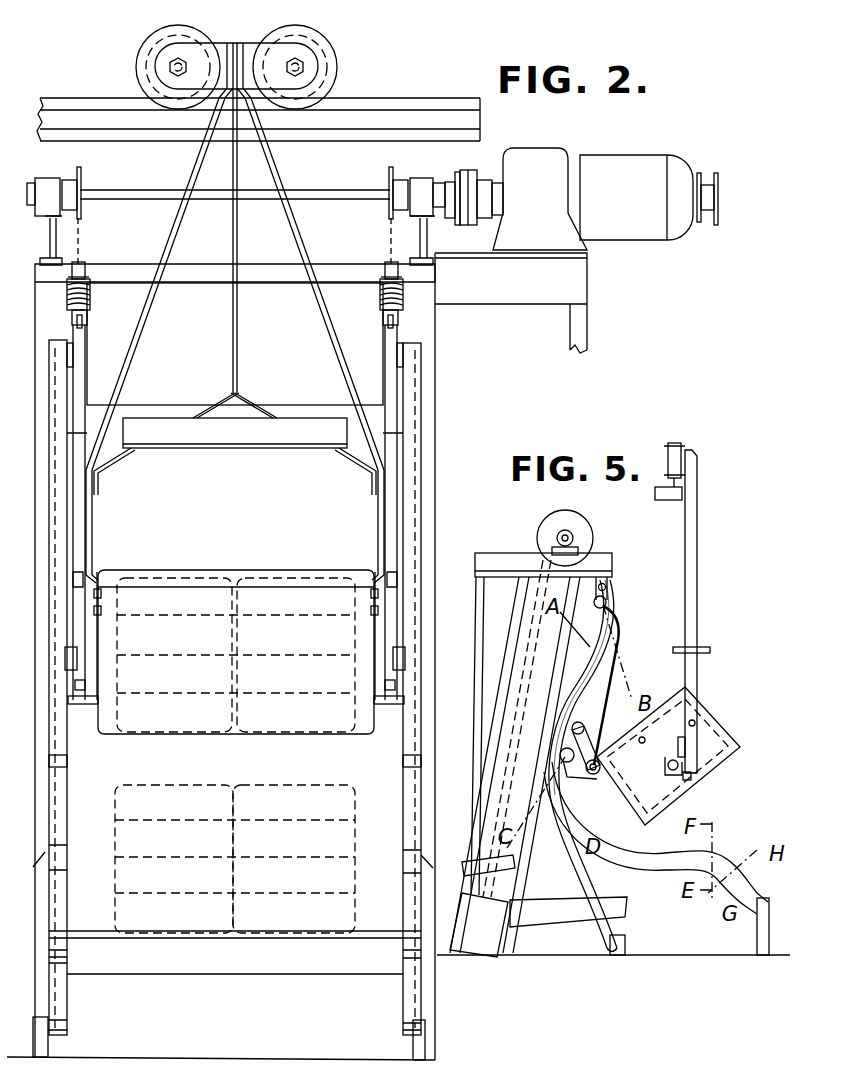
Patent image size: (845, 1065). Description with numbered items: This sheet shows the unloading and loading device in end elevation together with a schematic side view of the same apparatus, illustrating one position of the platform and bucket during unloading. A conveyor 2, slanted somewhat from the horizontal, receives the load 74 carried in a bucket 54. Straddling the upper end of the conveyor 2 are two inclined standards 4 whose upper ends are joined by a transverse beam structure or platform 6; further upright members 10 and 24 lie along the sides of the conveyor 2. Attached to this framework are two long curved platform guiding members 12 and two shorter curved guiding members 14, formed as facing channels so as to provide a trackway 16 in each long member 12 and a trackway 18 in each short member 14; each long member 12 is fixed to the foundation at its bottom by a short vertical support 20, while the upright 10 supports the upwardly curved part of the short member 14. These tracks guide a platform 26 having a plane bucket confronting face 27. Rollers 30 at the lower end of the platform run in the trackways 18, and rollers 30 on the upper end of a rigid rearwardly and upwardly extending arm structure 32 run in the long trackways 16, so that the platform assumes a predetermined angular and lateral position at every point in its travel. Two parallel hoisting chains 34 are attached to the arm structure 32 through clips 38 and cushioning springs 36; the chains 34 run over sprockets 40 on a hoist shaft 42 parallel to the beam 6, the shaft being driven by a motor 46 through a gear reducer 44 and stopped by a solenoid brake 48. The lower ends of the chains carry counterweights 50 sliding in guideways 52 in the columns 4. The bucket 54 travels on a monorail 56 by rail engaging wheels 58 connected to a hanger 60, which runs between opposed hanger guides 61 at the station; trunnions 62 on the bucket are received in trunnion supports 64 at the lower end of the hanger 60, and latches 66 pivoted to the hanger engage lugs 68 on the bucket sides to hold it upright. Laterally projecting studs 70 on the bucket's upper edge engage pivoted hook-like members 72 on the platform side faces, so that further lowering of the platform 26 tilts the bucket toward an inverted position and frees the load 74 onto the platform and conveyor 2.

In FIG. 2, the conveyor 2 is at (236, 976).
In FIG. 5, the conveyor 2 is at (547, 917).
In FIG. 2, the standards 4 is at (36, 383).
In FIG. 5, the standards 4 is at (471, 823).
In FIG. 2, the transverse beam structure or platform 6 is at (48, 242).
In FIG. 5, the transverse beam structure or platform 6 is at (503, 563).
In FIG. 2, the upright member 10 is at (36, 968).
In FIG. 2, the curved platform guiding member 12 is at (58, 441).
In FIG. 5, the curved platform guiding member 12 is at (596, 883).
In FIG. 2, the short curved platform guiding member 14 is at (60, 792).
In FIG. 5, the short curved platform guiding member 14 is at (722, 858).
In FIG. 2, the trackway 16 is at (55, 469).
In FIG. 2, the trackway 18 is at (57, 762).
In FIG. 5, the short vertical support 20 is at (625, 949).
In FIG. 2, the upright member 24 is at (48, 1045).
In FIG. 5, the upright member 24 is at (757, 941).
In FIG. 2, the platform 26 is at (280, 416).
In FIG. 5, the platform 26 is at (627, 638).
In FIG. 2, the bucket confronting face 27 is at (224, 501).
In FIG. 5, the bucket confronting face 27 is at (626, 652).
In FIG. 2, the rollers 30 is at (74, 352).
In FIG. 5, the rollers 30 is at (608, 600).
In FIG. 2, the arm structure 32 is at (80, 379).
In FIG. 5, the arm structure 32 is at (535, 641).
In FIG. 2, the hoisting chains 34 is at (82, 244).
In FIG. 5, the hoisting chains 34 is at (530, 656).
In FIG. 2, the springs 36 is at (91, 300).
In FIG. 2, the clips 38 is at (88, 320).
In FIG. 2, the sprockets 40 is at (82, 178).
In FIG. 5, the sprockets 40 is at (560, 540).
In FIG. 2, the hoist shaft 42 is at (162, 188).
In FIG. 5, the hoist shaft 42 is at (574, 537).
In FIG. 2, the gear reducer 44 is at (512, 200).
In FIG. 5, the gear reducer 44 is at (578, 525).
In FIG. 2, the motor 46 is at (609, 200).
In FIG. 2, the solenoid brake 48 is at (718, 192).
In FIG. 5, the counterweights 50 is at (490, 956).
In FIG. 5, the guideways 52 is at (500, 866).
In FIG. 2, the bucket 54 is at (283, 595).
In FIG. 5, the bucket 54 is at (718, 722).
In FIG. 2, the monorail 56 is at (398, 112).
In FIG. 5, the monorail 56 is at (683, 492).
In FIG. 2, the rail engaging wheels 58 is at (140, 54).
In FIG. 5, the rail engaging wheels 58 is at (676, 443).
In FIG. 2, the hanger 60 is at (158, 326).
In FIG. 5, the hanger 60 is at (698, 549).
In FIG. 2, the hanger guides 61 is at (275, 447).
In FIG. 5, the hanger guides 61 is at (707, 648).
In FIG. 2, the trunnions 62 is at (97, 677).
In FIG. 5, the trunnions 62 is at (700, 771).
In FIG. 5, the trunnion supports 64 is at (690, 783).
In FIG. 2, the latches 66 is at (101, 593).
In FIG. 5, the lugs 68 is at (646, 741).
In FIG. 2, the studs 70 is at (94, 575).
In FIG. 5, the studs 70 is at (601, 769).
In FIG. 2, the hook-like member 72 is at (78, 688).
In FIG. 5, the hook-like member 72 is at (590, 742).
In FIG. 2, the load 74 is at (232, 580).
In FIG. 5, the load 74 is at (730, 741).